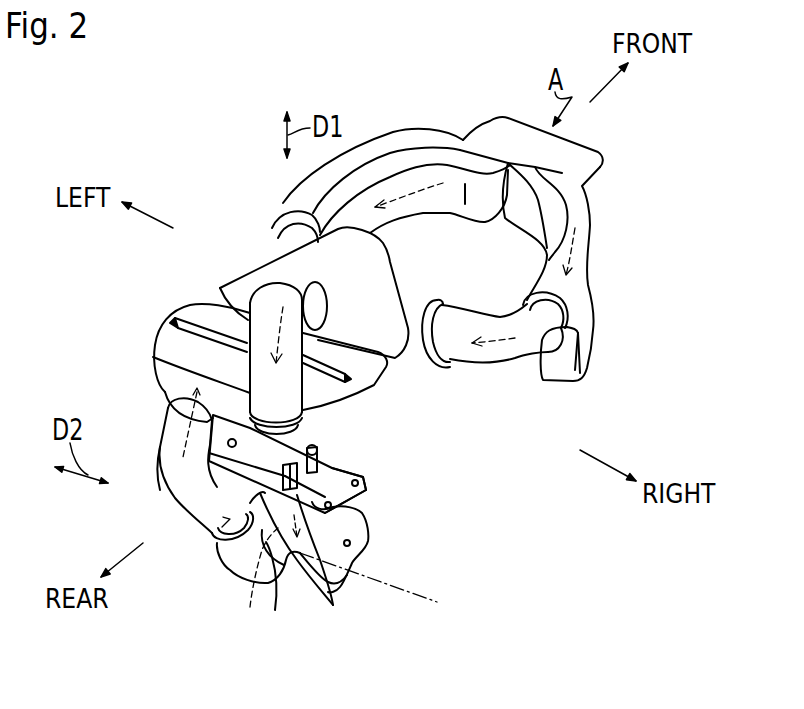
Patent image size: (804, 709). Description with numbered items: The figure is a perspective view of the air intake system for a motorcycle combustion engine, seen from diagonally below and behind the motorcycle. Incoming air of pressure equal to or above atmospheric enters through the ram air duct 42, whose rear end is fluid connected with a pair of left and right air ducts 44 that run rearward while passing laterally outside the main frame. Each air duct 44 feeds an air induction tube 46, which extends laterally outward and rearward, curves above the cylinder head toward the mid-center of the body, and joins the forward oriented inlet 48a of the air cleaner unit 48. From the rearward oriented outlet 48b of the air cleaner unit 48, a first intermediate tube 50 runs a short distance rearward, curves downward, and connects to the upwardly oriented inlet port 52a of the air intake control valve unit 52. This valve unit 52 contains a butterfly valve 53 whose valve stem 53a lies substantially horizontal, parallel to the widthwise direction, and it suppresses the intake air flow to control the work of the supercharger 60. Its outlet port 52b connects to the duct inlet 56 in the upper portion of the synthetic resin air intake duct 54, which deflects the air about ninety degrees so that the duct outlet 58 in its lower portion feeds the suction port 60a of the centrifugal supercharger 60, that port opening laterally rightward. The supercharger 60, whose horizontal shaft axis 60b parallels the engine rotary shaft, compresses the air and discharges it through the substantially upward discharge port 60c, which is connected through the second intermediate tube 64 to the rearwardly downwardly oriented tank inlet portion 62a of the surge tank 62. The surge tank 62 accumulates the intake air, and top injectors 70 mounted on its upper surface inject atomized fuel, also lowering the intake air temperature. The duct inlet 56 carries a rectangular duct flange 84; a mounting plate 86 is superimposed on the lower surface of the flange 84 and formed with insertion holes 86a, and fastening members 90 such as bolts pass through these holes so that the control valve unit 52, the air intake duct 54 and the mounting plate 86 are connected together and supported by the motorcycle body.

The ram air duct 42 is at (500, 120).
The air duct 44 is at (624, 282).
The air induction tube 46 is at (255, 214).
The air cleaner unit 48 is at (400, 257).
The forward oriented inlet 48a is at (438, 306).
The rearward oriented outlet 48b is at (240, 244).
The first intermediate tube 50 is at (213, 279).
The air intake control valve unit 52 is at (210, 449).
The upwardly oriented inlet port 52a is at (302, 424).
The outlet port 52b is at (328, 475).
The butterfly valve 53 is at (310, 431).
The valve stem 53a is at (320, 455).
The air intake duct 54 is at (372, 537).
The duct inlet 56 is at (257, 500).
The duct outlet 58 is at (283, 588).
The supercharger 60 is at (210, 588).
The suction port 60a is at (246, 582).
The shaft axis 60b is at (437, 592).
The discharge port 60c is at (210, 533).
The surge tank 62 is at (170, 346).
The tank inlet portion 62a is at (207, 384).
The second intermediate tube 64 is at (143, 405).
The top injector 70 is at (152, 294).
The duct flange 84 is at (145, 478).
The mounting plate 86 is at (347, 493).
The insertion hole 86a is at (370, 513).
The fastening member 90 is at (336, 604).